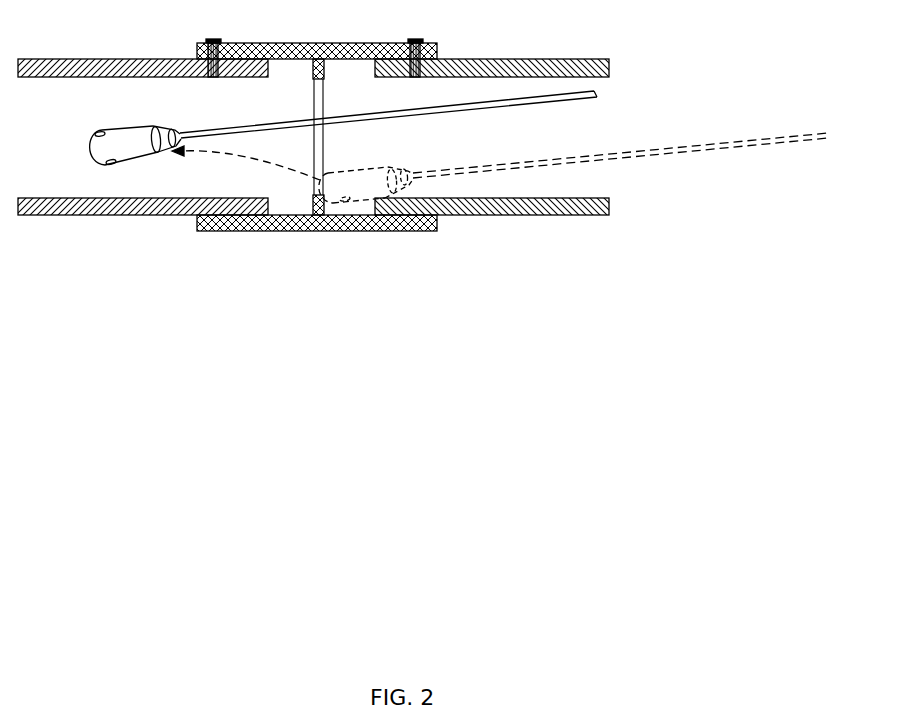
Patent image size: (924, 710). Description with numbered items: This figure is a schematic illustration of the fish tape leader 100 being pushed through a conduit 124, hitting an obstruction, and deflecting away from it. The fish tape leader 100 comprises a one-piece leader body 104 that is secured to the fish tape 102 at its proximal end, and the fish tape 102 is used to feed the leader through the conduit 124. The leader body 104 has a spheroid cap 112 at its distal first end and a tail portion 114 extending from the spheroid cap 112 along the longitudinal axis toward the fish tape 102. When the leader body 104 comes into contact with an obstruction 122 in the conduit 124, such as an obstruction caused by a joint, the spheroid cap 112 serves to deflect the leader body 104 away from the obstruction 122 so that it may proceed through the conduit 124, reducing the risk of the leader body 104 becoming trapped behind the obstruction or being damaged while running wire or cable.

The fish tape leader 100 is at (263, 177).
The fish tape 102 is at (508, 108).
The leader body 104 is at (121, 142).
The spheroid cap 112 is at (92, 153).
The tail portion 114 is at (319, 174).
The obstruction 122 is at (227, 197).
The conduit 124 is at (303, 102).